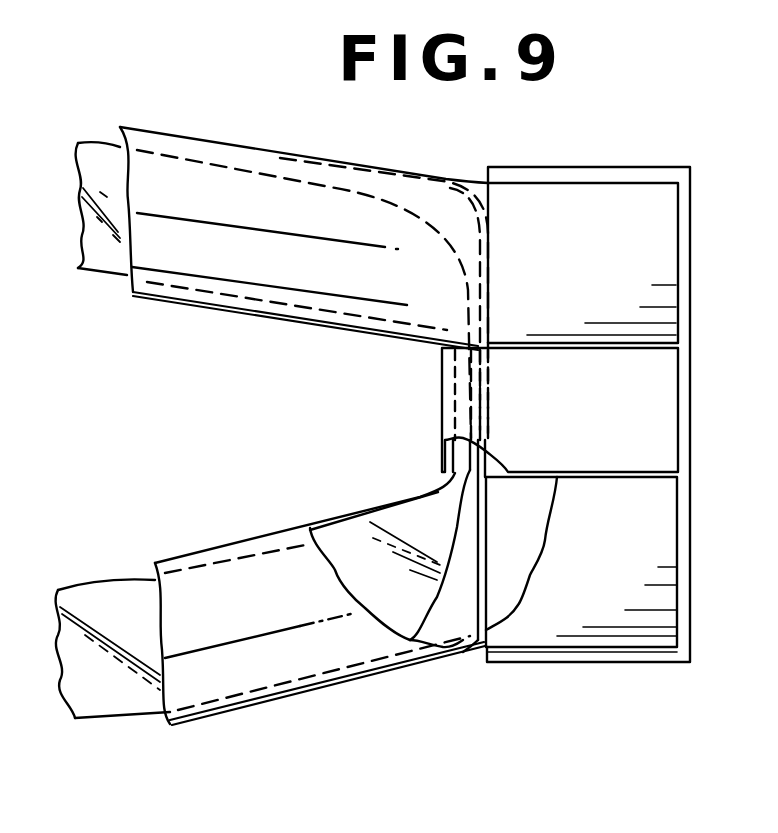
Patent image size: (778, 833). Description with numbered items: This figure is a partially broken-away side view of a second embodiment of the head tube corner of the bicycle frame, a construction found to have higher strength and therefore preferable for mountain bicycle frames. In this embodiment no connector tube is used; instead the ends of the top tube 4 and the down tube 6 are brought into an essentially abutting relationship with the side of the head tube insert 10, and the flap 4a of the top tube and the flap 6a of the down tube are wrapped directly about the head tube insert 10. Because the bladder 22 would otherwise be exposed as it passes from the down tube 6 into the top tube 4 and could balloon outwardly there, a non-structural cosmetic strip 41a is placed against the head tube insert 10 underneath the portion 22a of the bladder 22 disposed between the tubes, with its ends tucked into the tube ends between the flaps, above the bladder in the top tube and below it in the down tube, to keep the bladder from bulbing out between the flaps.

The top tube 4 is at (175, 133).
The flap of the top tube 4a is at (608, 267).
The down tube 6 is at (210, 718).
The flap of the down tube 6a is at (617, 569).
The head tube insert 10 is at (583, 660).
The bladder 22 is at (97, 253).
The portion of the bladder 22a is at (447, 373).
The strip 41a is at (620, 425).